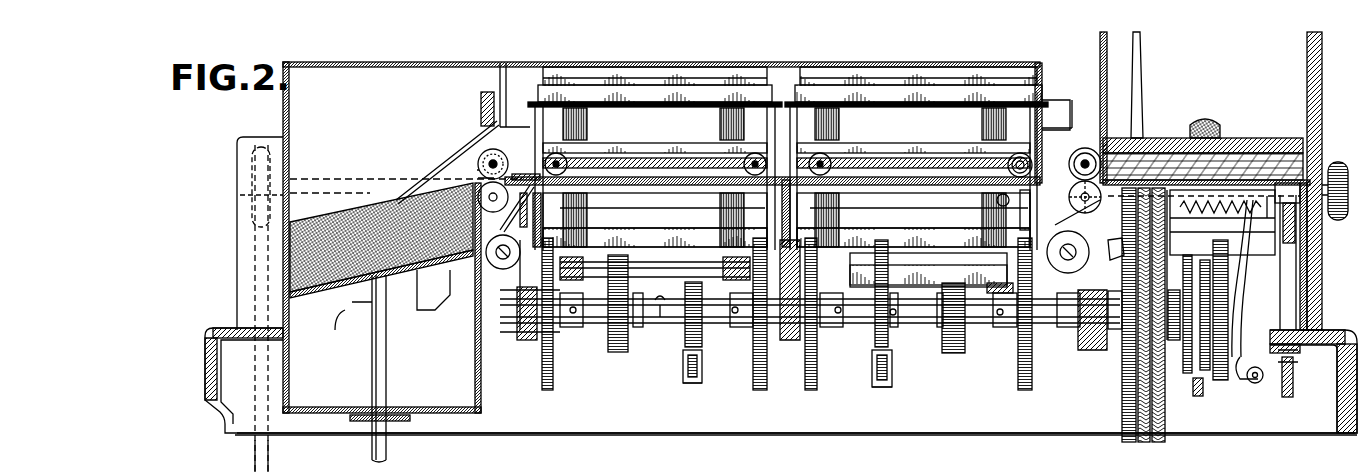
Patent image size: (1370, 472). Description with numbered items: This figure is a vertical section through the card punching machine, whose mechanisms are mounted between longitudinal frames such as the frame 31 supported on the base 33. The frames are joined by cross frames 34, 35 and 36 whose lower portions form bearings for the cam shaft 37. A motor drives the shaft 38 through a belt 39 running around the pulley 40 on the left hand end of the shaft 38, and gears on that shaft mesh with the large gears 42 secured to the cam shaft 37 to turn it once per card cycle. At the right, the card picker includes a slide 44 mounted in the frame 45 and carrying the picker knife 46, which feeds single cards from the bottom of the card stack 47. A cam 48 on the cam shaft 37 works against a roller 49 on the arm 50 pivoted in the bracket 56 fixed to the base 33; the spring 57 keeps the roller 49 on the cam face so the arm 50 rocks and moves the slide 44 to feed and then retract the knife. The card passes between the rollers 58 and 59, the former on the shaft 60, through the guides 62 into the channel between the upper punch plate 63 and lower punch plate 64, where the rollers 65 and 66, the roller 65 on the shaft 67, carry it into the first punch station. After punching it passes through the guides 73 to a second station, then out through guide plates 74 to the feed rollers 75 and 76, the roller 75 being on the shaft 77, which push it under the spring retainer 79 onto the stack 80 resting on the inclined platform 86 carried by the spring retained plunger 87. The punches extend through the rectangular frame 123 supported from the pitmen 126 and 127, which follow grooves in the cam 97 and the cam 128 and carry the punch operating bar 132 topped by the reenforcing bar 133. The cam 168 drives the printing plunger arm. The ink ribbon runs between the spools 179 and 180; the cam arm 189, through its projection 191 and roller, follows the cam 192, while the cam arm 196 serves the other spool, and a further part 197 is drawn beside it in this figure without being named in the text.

The longitudinal frame 31 is at (1086, 114).
The base 33 is at (218, 328).
The cross frame 34 is at (524, 337).
The cross frame 35 is at (791, 340).
The cross frame 36 is at (1093, 342).
The cam shaft 37 is at (925, 315).
The shaft 38 is at (342, 182).
The belt 39 is at (262, 462).
The pulley 40 is at (250, 160).
The large gear 42 is at (1142, 441).
The slide 44 is at (1313, 220).
The frame 45 is at (1318, 242).
The picker knife 46 is at (1315, 170).
The card stack 47 is at (1252, 147).
The cam 48 is at (1218, 382).
The roller 49 is at (1226, 290).
The arm 50 is at (1262, 288).
The bracket 56 is at (1283, 383).
The spring 57 is at (1246, 214).
The roller 58 is at (1076, 148).
The roller 59 is at (1115, 210).
The shaft 60 is at (1089, 160).
The guide 62 is at (1025, 173).
The upper punch plate 63 is at (897, 186).
The lower punch plate 64 is at (931, 188).
The roller 65 is at (1012, 159).
The roller 66 is at (1025, 205).
The shaft 67 is at (1000, 192).
The guide 73 is at (786, 176).
The guide plate 74 is at (519, 174).
The feed roller 75 is at (479, 157).
The feed roller 76 is at (482, 188).
The shaft 77 is at (497, 152).
The spring retainer 79 is at (440, 165).
The stack 80 is at (383, 202).
The inclined platform 86 is at (344, 286).
The spring retained plunger 87 is at (372, 358).
The cam 97 is at (542, 380).
The rectangular frame 123 is at (917, 148).
The pitman 126 is at (790, 154).
The pitman 127 is at (1030, 143).
The cam 128 is at (768, 378).
The punch operating bar 132 is at (906, 80).
The reenforcing bar 133 is at (890, 76).
The cam 168 is at (610, 346).
The spool 179 is at (486, 268).
The spool 180 is at (1113, 228).
The cam arm 189 is at (702, 383).
The projection 191 is at (702, 366).
The cam 192 is at (692, 328).
The cam arm 196 is at (887, 385).
The pawl 197 is at (890, 352).